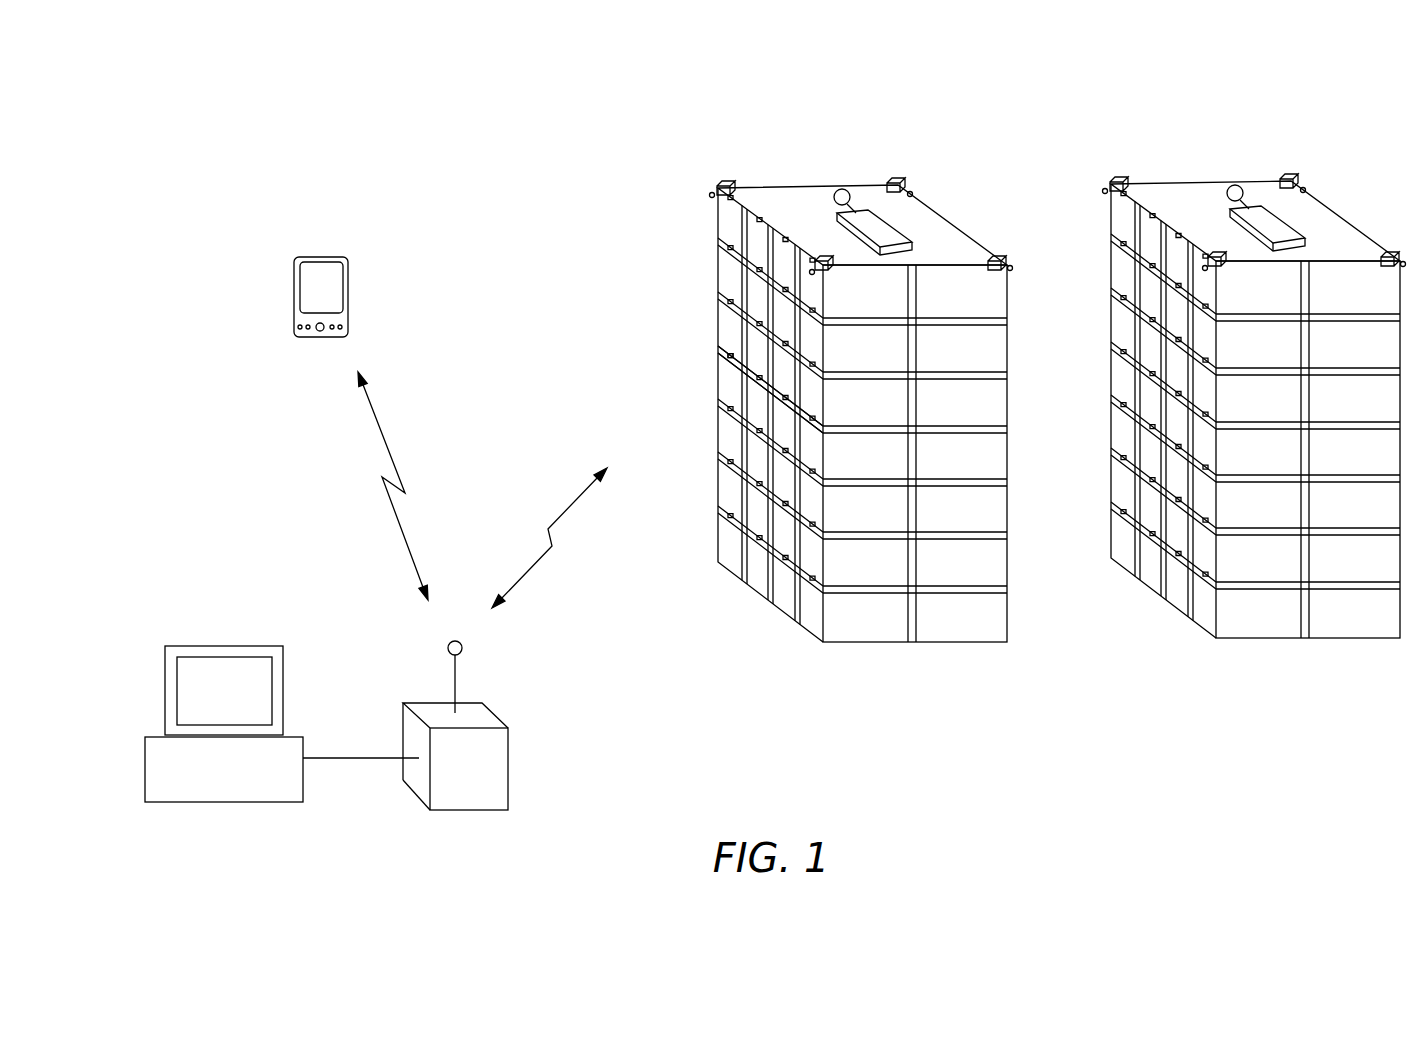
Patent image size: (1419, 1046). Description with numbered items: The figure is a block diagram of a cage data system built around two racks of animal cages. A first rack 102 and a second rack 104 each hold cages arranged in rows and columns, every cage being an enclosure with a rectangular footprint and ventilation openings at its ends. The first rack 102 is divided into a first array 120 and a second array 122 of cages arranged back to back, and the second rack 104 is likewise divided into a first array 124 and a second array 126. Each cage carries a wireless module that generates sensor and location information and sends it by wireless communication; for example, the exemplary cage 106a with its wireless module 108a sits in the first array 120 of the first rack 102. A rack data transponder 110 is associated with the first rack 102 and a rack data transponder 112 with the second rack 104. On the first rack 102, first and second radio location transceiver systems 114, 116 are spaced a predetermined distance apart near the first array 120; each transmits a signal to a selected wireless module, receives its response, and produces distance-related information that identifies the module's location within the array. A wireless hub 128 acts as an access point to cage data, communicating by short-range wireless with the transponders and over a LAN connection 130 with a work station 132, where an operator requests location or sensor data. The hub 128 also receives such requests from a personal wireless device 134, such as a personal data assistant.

The first rack 102 is at (882, 157).
The second rack 104 is at (1204, 410).
The exemplary cage 106a is at (727, 393).
The wireless module 108a is at (725, 367).
The rack data transponder 110 is at (903, 233).
The rack data transponder 112 is at (1314, 210).
The first radio location transceiver system 114 is at (725, 180).
The second radio location transceiver system 116 is at (820, 252).
The first array 120 is at (862, 668).
The second array 122 is at (942, 668).
The first array 124 is at (1256, 696).
The second array 126 is at (1335, 696).
The wireless hub 128 is at (508, 776).
The LAN connection 130 is at (340, 757).
The work station 132 is at (208, 645).
The personal wireless device 134 is at (348, 295).